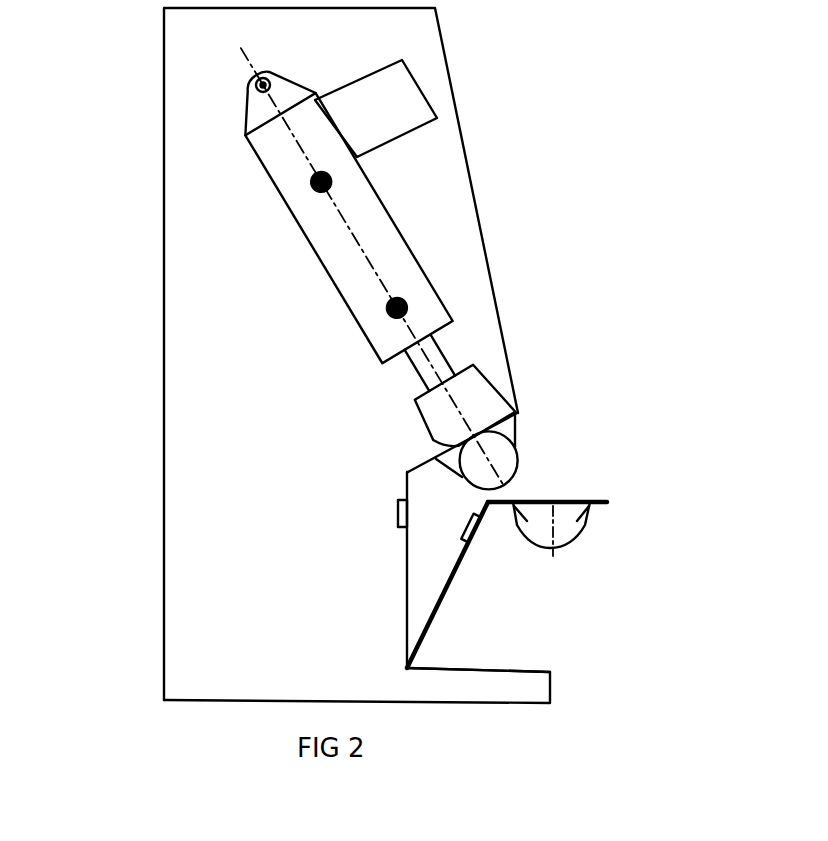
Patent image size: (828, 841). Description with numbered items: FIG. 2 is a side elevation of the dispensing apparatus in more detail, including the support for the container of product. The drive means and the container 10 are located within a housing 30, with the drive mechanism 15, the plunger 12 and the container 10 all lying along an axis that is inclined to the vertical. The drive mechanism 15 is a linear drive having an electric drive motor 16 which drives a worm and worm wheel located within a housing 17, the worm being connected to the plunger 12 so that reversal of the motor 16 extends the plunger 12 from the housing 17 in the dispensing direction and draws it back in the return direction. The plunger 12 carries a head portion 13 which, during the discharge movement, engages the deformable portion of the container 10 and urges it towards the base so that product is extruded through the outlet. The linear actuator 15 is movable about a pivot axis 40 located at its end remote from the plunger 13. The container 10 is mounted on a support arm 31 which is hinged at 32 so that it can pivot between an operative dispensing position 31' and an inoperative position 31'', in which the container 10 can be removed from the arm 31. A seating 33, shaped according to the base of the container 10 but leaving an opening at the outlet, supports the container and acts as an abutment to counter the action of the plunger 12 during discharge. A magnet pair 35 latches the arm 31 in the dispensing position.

The container 10 is at (537, 458).
The plunger 12 is at (494, 344).
The head portion 13 is at (473, 398).
The drive mechanism 15 is at (327, 268).
The electric drive motor 16 is at (412, 120).
The housing 17 is at (372, 208).
The housing 30 is at (160, 158).
The support arm 31 is at (468, 540).
The operative position of the support arm 31' is at (364, 570).
The inoperative position of the support arm 31'' is at (470, 585).
The hinge 32 is at (407, 668).
The seating 33 is at (535, 425).
The magnet pair 35 is at (398, 508).
The pivot axis 40 is at (258, 84).